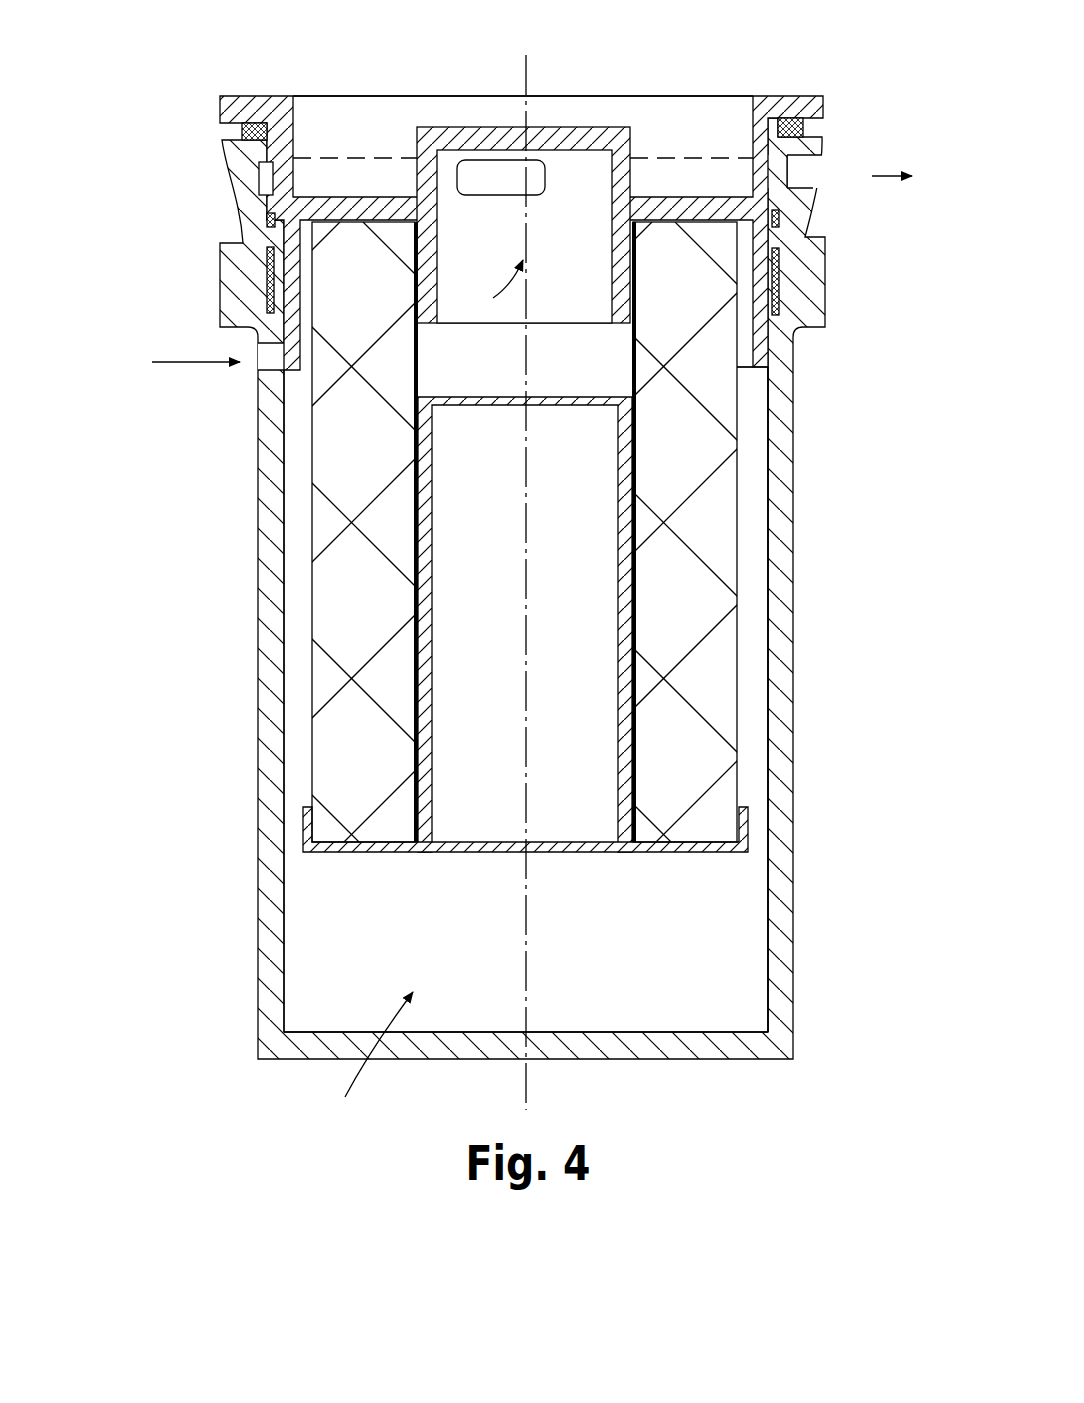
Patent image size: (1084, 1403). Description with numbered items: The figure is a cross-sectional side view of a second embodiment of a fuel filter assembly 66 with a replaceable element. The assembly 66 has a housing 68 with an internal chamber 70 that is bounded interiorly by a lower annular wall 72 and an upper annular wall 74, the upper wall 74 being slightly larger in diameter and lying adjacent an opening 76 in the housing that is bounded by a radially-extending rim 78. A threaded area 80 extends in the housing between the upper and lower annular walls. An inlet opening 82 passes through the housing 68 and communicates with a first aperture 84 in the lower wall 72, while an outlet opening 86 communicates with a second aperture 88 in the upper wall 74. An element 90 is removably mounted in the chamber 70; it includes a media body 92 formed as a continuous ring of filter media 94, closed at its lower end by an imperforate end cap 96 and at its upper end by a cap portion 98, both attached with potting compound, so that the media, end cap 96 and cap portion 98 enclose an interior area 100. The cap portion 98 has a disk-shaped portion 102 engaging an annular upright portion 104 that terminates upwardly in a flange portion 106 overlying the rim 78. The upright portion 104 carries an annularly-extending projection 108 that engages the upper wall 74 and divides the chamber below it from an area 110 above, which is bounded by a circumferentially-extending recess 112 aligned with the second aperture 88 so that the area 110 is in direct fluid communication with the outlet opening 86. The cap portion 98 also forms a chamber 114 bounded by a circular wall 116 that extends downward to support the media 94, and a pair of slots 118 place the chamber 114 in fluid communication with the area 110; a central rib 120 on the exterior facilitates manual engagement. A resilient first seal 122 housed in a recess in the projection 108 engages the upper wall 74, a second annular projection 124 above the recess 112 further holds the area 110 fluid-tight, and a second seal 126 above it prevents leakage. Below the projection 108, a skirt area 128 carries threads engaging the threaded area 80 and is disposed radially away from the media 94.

The filter assembly 66 is at (883, 778).
The housing 68 is at (513, 573).
The internal chamber 70 is at (526, 1056).
The lower annular wall 72 is at (770, 904).
The upper annular wall 74 is at (262, 172).
The opening 76 is at (772, 136).
The rim 78 is at (825, 100).
The threaded area 80 is at (790, 290).
The inlet opening 82 is at (256, 372).
The first aperture 84 is at (290, 398).
The outlet opening 86 is at (812, 177).
The second aperture 88 is at (824, 158).
The element 90 is at (467, 852).
The media body 92 is at (786, 630).
The filter media 94 is at (700, 521).
The end cap 96 is at (372, 846).
The cap portion 98 is at (566, 215).
The interior area 100 is at (456, 377).
The disk-shaped portion 102 is at (688, 203).
The annular upright portion 104 is at (286, 148).
The flange portion 106 is at (795, 118).
The annularly-extending projection 108 is at (220, 242).
The area 110 is at (222, 190).
The circumferentially-extending recess 112 is at (340, 178).
The chamber 114 is at (480, 287).
The circular wall 116 is at (523, 175).
The slots 118 is at (490, 193).
The central rib 120 is at (631, 197).
The first seal 122 is at (780, 223).
The second annular projection 124 is at (221, 153).
The second seal 126 is at (250, 124).
The skirt area 128 is at (741, 370).